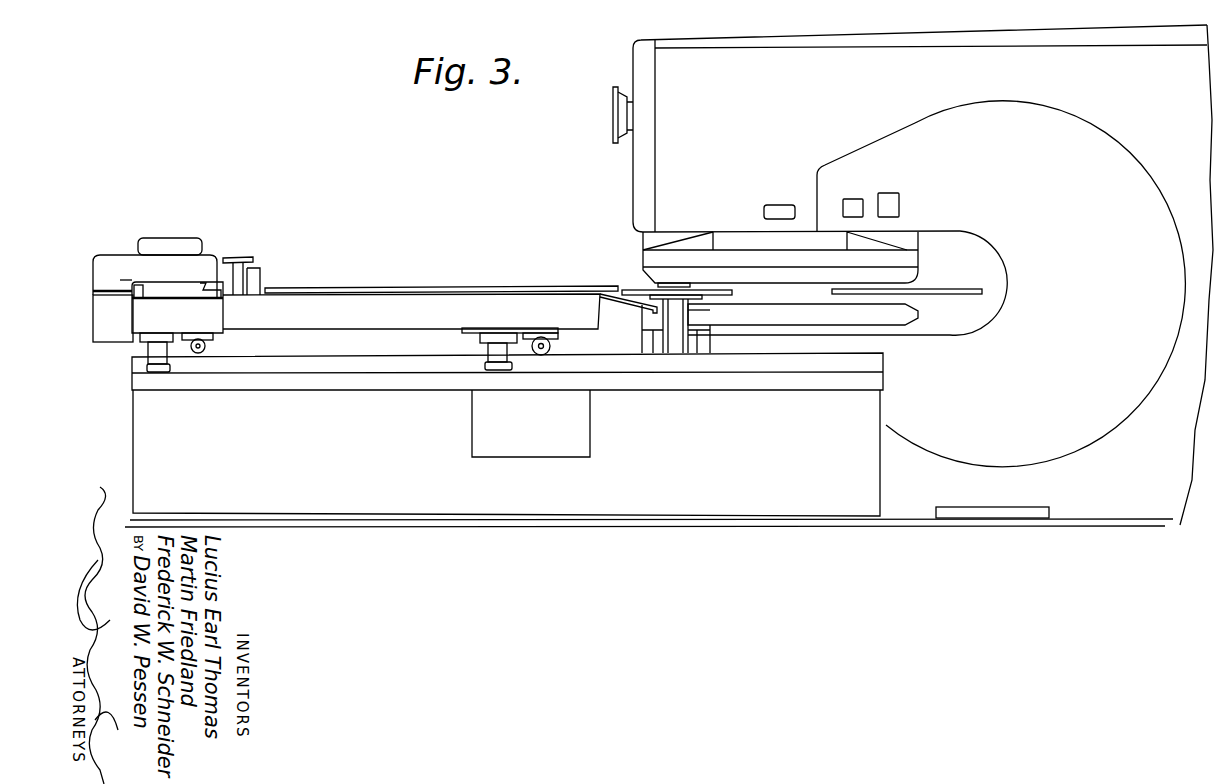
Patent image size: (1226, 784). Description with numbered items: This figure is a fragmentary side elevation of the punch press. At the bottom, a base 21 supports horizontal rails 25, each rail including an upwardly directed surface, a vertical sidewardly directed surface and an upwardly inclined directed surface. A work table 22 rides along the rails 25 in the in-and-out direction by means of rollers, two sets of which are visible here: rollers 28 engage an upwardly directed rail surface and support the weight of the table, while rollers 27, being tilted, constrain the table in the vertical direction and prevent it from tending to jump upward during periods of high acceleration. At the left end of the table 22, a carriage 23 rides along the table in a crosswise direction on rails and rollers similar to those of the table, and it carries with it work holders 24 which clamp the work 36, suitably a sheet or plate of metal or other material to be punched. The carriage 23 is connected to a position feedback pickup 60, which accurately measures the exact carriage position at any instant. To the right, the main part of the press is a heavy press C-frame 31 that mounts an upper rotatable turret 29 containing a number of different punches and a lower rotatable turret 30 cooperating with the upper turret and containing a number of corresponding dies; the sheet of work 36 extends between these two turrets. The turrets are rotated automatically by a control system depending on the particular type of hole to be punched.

The base 21 is at (372, 493).
The work table 22 is at (366, 326).
The carriage 23 is at (112, 270).
The work holders 24 is at (258, 279).
The horizontal rails 25 is at (136, 366).
The rollers 27 is at (162, 369).
The rollers 28 is at (203, 352).
The upper rotatable turret 29 is at (890, 276).
The lower rotatable turret 30 is at (890, 313).
The press C-frame 31 is at (1035, 284).
The work 36 is at (422, 260).
The position feedback pickup 60 is at (110, 322).